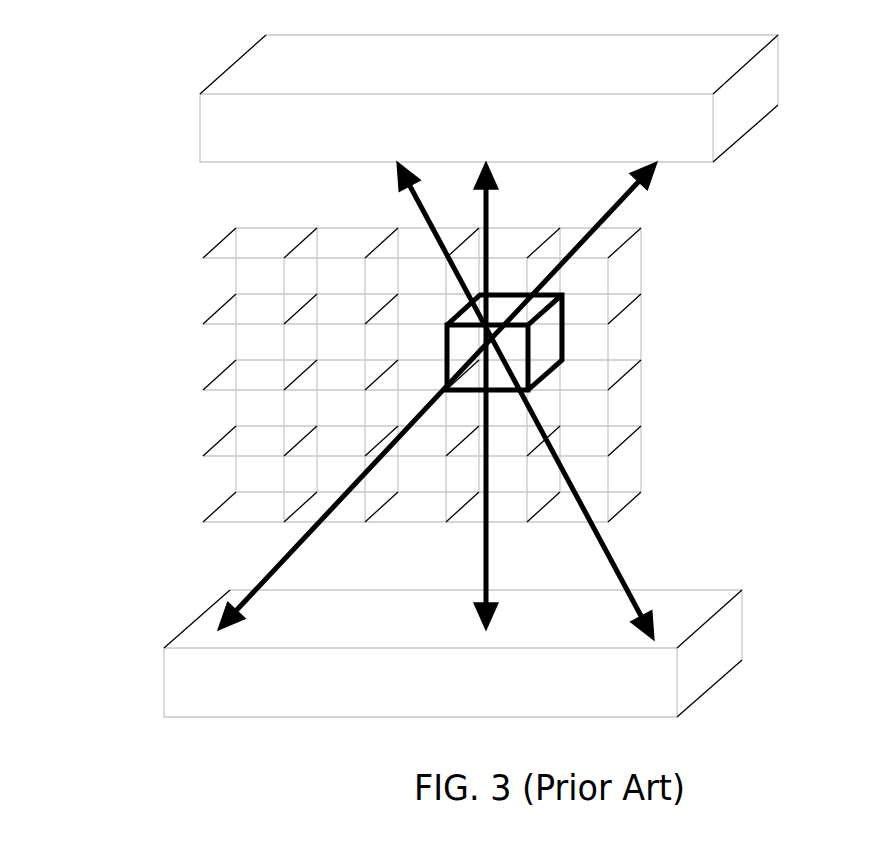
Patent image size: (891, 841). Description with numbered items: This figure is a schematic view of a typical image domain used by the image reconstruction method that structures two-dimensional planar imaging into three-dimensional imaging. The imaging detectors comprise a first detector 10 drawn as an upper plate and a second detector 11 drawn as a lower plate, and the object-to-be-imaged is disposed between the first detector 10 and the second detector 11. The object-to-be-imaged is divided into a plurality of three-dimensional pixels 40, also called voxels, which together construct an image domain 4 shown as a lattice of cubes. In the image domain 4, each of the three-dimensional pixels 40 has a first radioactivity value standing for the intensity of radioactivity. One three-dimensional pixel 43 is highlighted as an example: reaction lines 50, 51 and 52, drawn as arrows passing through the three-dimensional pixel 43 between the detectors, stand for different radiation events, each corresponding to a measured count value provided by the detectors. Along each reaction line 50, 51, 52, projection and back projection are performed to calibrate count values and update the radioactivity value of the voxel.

The first detector 10 is at (772, 75).
The second detector 11 is at (730, 632).
The image domain 4 is at (336, 337).
The 3D pixels 40 is at (328, 288).
The 3D pixel 43 is at (543, 342).
The reaction line 50 is at (643, 617).
The reaction line 51 is at (485, 567).
The reaction line 52 is at (223, 612).